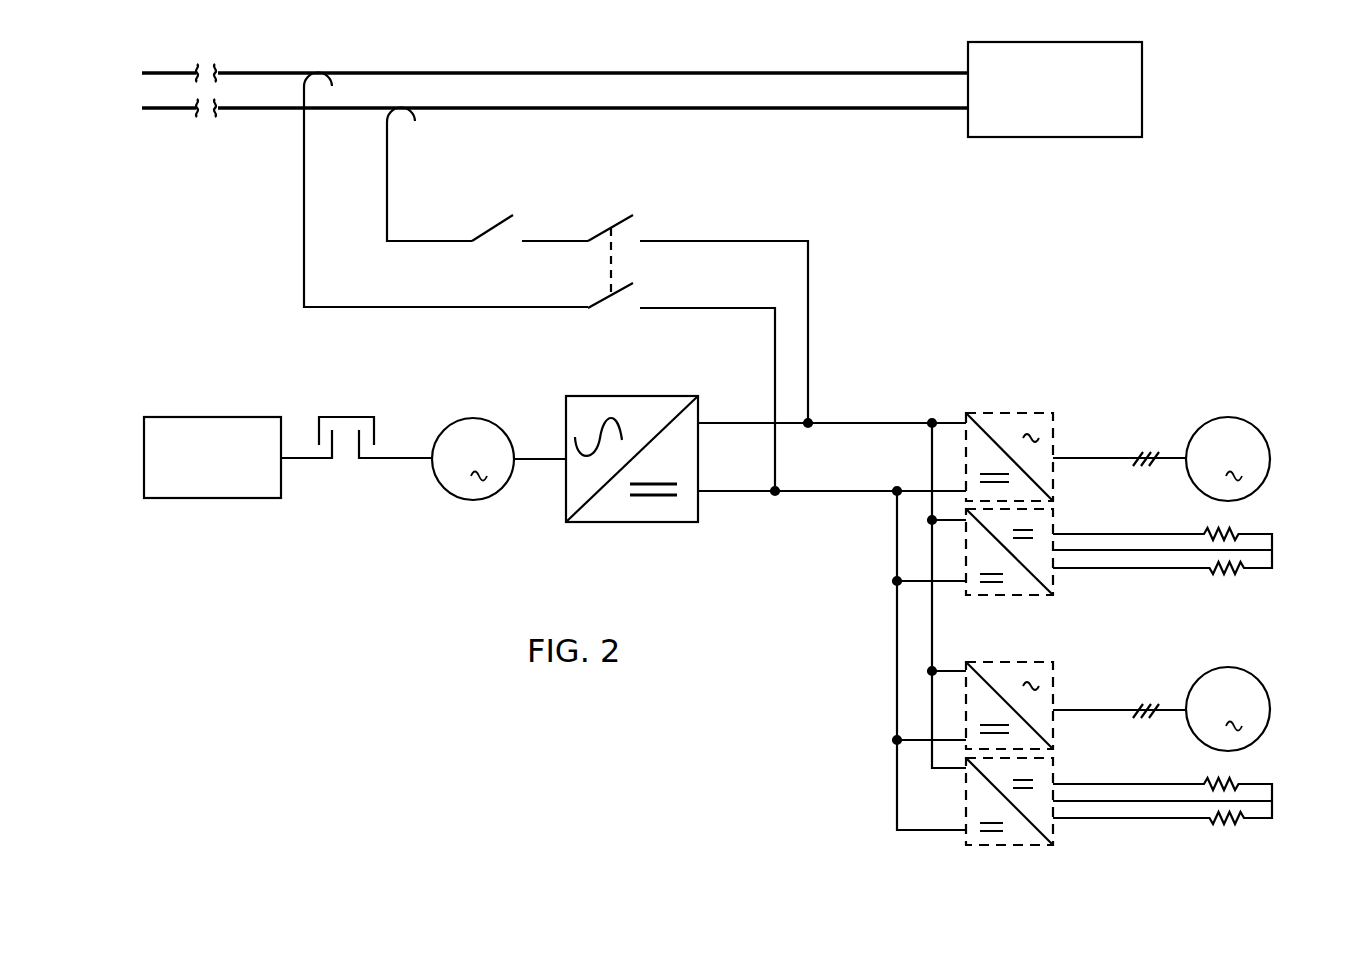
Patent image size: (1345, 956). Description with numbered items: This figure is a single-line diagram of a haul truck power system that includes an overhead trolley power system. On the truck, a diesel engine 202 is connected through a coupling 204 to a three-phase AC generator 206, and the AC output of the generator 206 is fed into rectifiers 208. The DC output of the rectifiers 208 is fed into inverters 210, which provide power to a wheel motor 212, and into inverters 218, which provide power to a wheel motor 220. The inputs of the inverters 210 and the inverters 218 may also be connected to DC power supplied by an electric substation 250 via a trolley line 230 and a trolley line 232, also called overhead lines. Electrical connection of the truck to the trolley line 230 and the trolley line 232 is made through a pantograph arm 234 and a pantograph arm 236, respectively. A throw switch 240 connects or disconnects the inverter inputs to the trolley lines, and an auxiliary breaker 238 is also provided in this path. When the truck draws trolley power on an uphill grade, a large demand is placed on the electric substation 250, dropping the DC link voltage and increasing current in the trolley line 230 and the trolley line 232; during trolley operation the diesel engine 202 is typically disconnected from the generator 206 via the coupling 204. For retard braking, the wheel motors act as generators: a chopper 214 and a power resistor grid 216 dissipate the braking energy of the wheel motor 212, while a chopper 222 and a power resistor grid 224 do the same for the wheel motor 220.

The diesel engine 202 is at (212, 473).
The coupling 204 is at (356, 454).
The 3-phase AC generator 206 is at (499, 474).
The rectifiers 208 is at (766, 613).
The inverters 210 is at (1034, 455).
The wheel motor 212 is at (1184, 459).
The chopper 214 is at (1009, 566).
The power resistor grid 216 is at (1162, 567).
The inverters 218 is at (1034, 704).
The wheel motor 220 is at (1182, 709).
The chopper 222 is at (1009, 816).
The power resistor grid 224 is at (1162, 817).
The trolley line 230 is at (555, 64).
The trolley line 232 is at (555, 120).
The pantograph arm 234 is at (424, 190).
The pantograph arm 236 is at (429, 174).
The auxiliary breaker 238 is at (530, 242).
The throw switch 240 is at (700, 355).
The electric substation 250 is at (1055, 105).